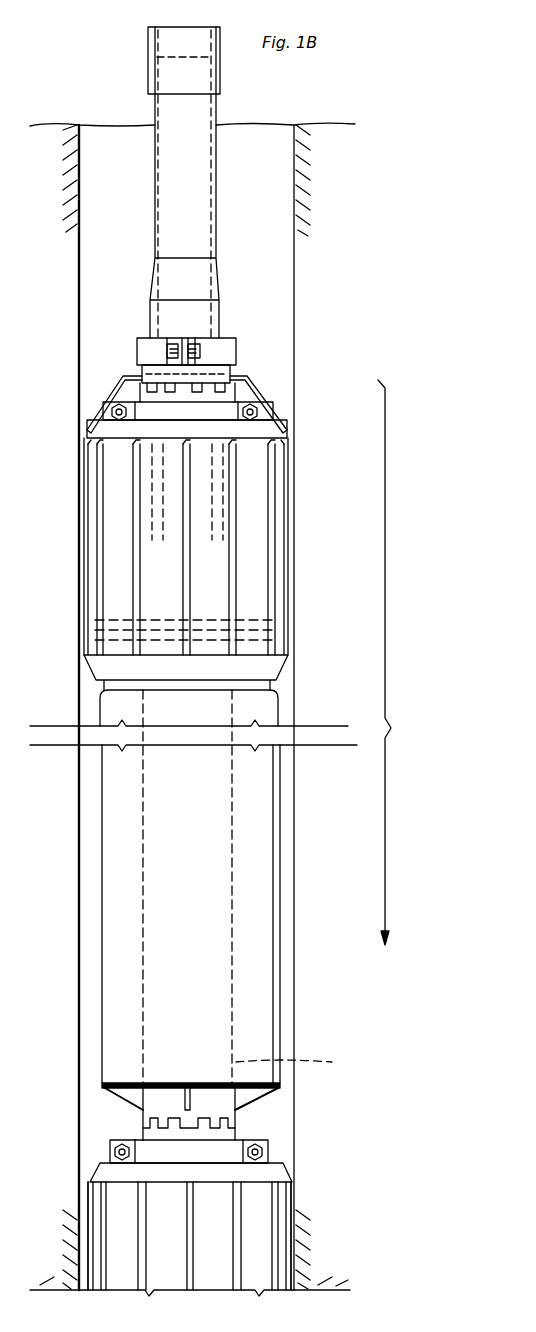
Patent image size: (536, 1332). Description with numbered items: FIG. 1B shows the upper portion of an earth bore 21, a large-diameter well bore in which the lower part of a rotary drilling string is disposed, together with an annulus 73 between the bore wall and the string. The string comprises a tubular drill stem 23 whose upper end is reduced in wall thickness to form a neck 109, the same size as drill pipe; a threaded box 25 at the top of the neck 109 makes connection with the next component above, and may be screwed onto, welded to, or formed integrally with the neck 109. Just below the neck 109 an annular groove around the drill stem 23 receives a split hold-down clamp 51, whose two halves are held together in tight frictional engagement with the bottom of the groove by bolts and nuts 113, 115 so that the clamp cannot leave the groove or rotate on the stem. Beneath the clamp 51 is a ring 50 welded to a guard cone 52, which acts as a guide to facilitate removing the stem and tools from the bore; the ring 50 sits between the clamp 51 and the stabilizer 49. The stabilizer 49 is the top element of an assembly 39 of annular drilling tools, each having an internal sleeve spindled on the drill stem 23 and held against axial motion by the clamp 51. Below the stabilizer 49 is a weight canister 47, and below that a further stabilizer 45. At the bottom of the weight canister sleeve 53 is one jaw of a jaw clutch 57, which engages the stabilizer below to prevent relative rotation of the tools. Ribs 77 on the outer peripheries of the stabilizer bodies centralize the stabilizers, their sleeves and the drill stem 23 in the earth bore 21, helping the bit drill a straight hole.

The earth bore 21 is at (79, 282).
The annulus 73 is at (92, 254).
The threaded box 25 is at (148, 75).
The neck 109 is at (216, 203).
The drill stem 23 is at (200, 338).
The split hold-down clamp 51 is at (236, 343).
The bolts 113 is at (167, 351).
The nuts 115 is at (200, 343).
The ring 50 is at (142, 368).
The guard cone 52 is at (250, 378).
The stabilizer 49 is at (292, 541).
The ribs 77 is at (150, 576).
The weight canister 47 is at (283, 870).
The weight canister sleeve 53 is at (296, 1064).
The jaw clutch 57 is at (245, 1123).
The stabilizer 45 is at (300, 1196).
The assembly of annular drilling tools 39 is at (398, 662).